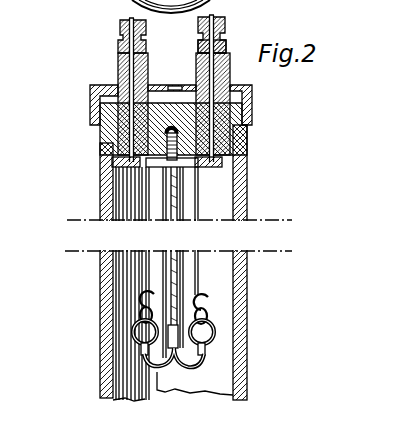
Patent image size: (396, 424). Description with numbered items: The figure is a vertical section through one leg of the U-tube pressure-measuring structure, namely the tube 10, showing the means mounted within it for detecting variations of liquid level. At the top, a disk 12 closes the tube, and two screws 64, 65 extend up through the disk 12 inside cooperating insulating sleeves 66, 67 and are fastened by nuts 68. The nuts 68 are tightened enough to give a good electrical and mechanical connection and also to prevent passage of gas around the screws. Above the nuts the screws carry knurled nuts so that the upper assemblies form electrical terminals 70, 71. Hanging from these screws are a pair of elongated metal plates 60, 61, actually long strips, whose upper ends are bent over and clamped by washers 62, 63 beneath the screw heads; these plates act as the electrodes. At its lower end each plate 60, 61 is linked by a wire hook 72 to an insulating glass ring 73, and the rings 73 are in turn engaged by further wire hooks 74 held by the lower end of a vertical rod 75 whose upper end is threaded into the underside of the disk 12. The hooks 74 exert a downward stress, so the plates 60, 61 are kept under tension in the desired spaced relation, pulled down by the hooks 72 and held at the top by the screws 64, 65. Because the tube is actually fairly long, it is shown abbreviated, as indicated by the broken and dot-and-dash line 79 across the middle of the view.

The tube 10 is at (242, 320).
The disk 12 is at (100, 133).
The metal plate 60 is at (143, 192).
The metal plate 61 is at (200, 207).
The washer 62 is at (112, 162).
The washer 63 is at (248, 160).
The screw 64 is at (90, 100).
The screw 65 is at (213, 133).
The insulating sleeve 66 is at (118, 68).
The insulating sleeve 67 is at (230, 70).
The nut 68 is at (198, 47).
The electrical terminal 70 is at (118, 27).
The electrical terminal 71 is at (227, 22).
The wire hook 72 is at (136, 305).
The glass ring 73 is at (142, 361).
The wire hook 74 is at (203, 370).
The vertical rod 75 is at (177, 272).
The dot-and-dash line 79 is at (67, 221).